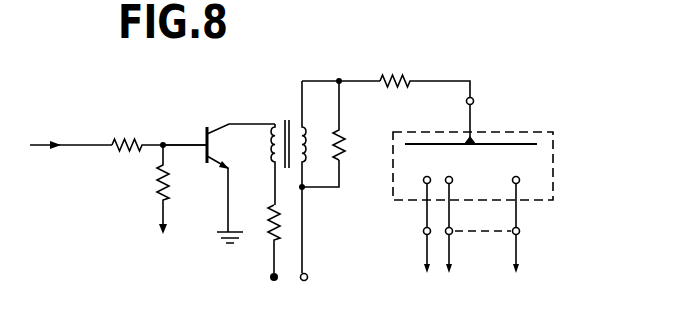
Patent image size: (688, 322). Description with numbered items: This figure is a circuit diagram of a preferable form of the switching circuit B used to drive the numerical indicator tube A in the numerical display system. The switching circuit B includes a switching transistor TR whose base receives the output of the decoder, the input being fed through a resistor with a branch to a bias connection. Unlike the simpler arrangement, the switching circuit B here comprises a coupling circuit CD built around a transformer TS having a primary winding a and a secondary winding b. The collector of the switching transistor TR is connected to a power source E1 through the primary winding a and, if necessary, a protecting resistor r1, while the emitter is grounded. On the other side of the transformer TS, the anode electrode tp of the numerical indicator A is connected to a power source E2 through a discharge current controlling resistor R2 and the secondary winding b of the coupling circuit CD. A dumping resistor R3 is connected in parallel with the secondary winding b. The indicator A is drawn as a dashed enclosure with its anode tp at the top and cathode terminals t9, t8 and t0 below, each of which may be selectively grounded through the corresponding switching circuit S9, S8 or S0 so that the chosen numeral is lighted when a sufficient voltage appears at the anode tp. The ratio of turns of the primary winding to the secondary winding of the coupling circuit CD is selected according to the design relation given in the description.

The switching transistor TR is at (206, 130).
The switching circuit B is at (219, 83).
The coupling circuit CD is at (292, 83).
The transformer TS is at (288, 120).
The primary winding a is at (268, 147).
The secondary winding b is at (307, 147).
The discharge current controlling resistor R2 is at (425, 72).
The dumping resistor R3 is at (352, 120).
The anode terminal tp is at (474, 99).
The numerical indicator tube A is at (553, 155).
The protecting resistor r1 is at (263, 237).
The power source E1 is at (270, 277).
The power source E2 is at (308, 277).
The bias source bias is at (159, 203).
The terminal t9 is at (429, 234).
The terminal t8 is at (451, 234).
The terminal t0 is at (514, 234).
The switching circuit S9 is at (421, 270).
The switching circuit S8 is at (454, 270).
The switching circuit S0 is at (515, 270).